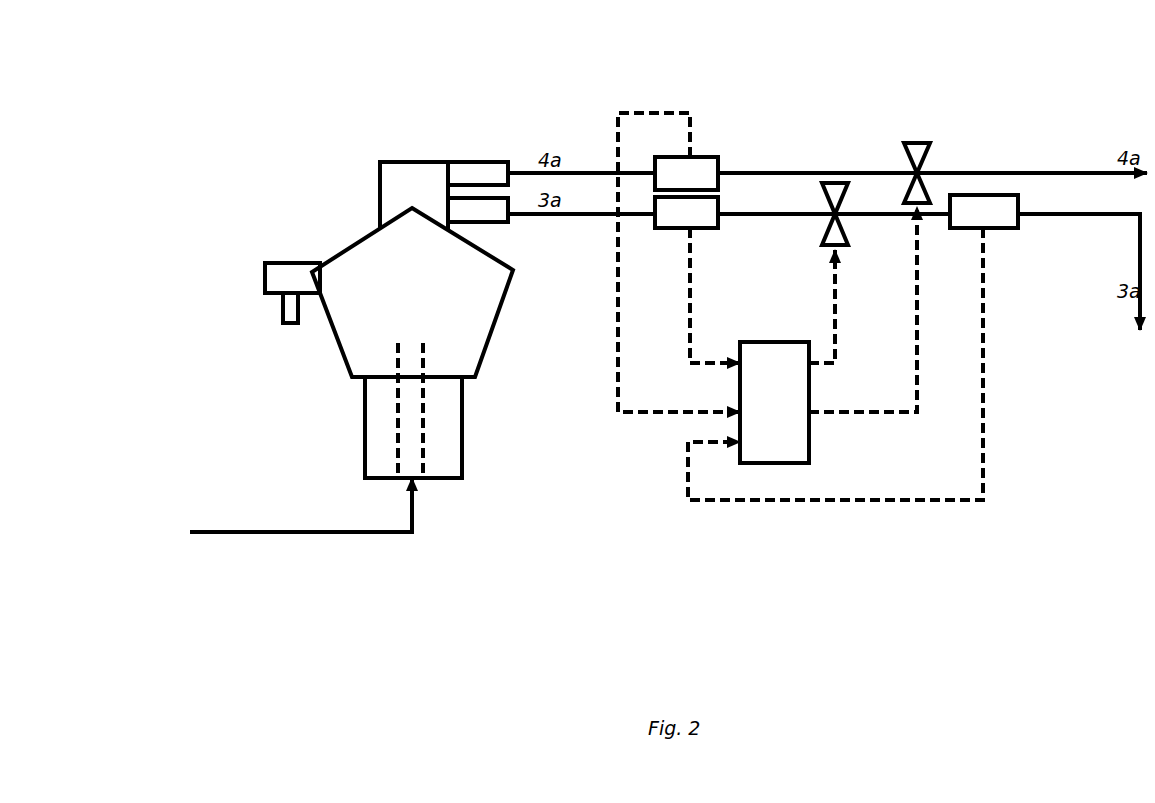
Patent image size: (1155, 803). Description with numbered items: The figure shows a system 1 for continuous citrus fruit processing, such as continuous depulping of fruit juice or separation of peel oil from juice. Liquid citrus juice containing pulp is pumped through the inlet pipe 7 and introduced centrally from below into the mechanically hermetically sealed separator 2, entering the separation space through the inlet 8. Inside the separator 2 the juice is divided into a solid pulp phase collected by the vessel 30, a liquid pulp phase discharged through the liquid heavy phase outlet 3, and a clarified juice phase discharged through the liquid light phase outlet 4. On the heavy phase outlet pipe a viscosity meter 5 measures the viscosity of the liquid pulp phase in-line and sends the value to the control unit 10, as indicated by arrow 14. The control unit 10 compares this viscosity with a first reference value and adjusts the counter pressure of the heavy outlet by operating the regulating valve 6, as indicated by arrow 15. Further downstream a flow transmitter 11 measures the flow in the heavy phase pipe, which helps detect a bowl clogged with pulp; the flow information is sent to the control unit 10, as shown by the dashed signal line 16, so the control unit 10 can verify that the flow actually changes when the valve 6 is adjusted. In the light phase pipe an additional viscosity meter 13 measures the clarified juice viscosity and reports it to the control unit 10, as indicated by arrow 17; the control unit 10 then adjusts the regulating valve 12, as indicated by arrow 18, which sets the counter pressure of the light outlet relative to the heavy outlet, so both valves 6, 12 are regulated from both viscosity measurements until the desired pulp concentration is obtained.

The system 1 is at (318, 103).
The separator 2 is at (360, 253).
The liquid heavy phase outlet 3 is at (478, 215).
The liquid light phase outlet 4 is at (485, 170).
The viscosity meter 5 is at (700, 217).
The regulating valve 6 is at (837, 180).
The inlet pipe 7 is at (335, 535).
The inlet 8 is at (408, 332).
The control unit 10 is at (792, 358).
The flow transmitter 11 is at (993, 220).
The regulating valve 12 is at (913, 152).
The additional viscosity meter 13 is at (697, 167).
The arrow 14 is at (699, 295).
The arrow 15 is at (819, 306).
The signal line from sensor 11 16 is at (818, 364).
The arrow 17 is at (679, 262).
The arrow 18 is at (863, 309).
The vessel 30 is at (287, 262).